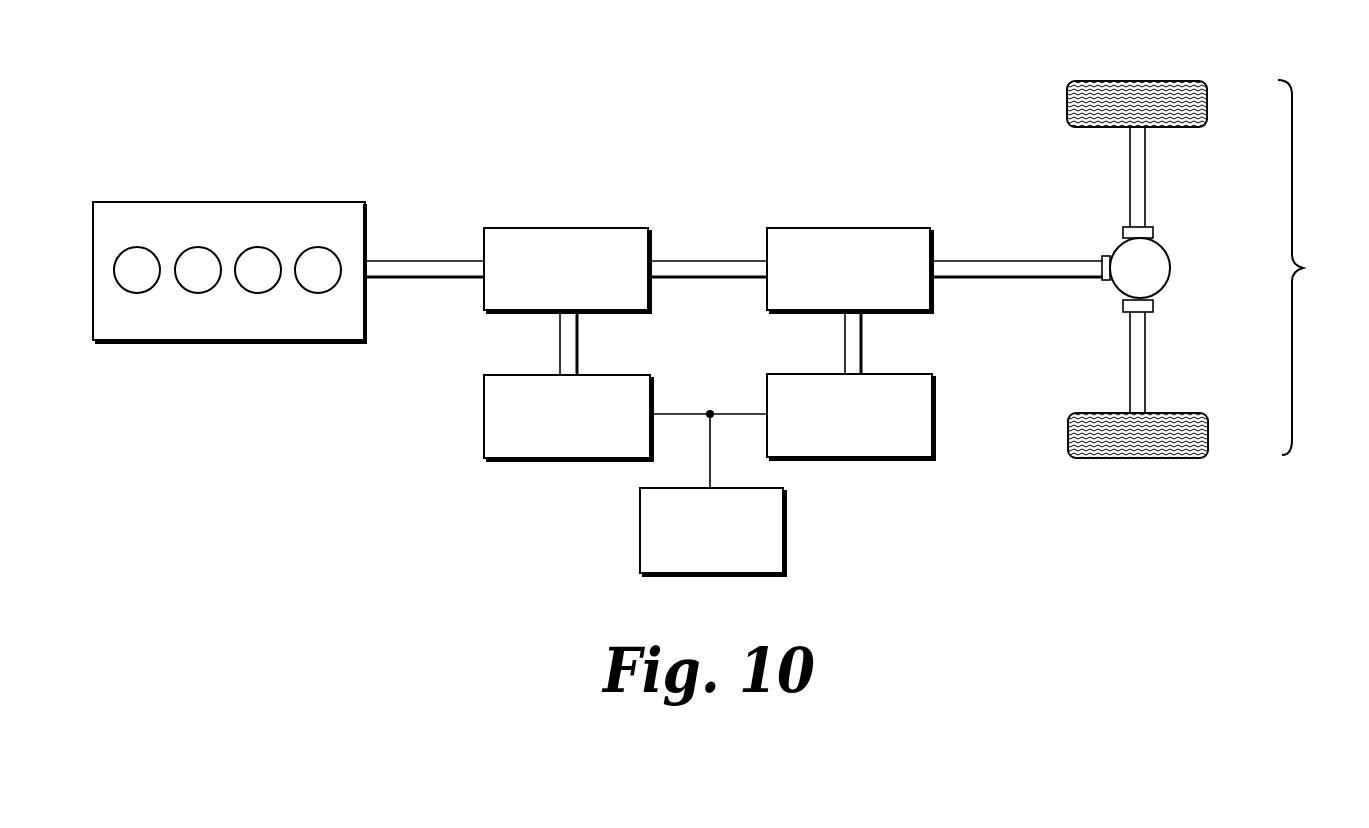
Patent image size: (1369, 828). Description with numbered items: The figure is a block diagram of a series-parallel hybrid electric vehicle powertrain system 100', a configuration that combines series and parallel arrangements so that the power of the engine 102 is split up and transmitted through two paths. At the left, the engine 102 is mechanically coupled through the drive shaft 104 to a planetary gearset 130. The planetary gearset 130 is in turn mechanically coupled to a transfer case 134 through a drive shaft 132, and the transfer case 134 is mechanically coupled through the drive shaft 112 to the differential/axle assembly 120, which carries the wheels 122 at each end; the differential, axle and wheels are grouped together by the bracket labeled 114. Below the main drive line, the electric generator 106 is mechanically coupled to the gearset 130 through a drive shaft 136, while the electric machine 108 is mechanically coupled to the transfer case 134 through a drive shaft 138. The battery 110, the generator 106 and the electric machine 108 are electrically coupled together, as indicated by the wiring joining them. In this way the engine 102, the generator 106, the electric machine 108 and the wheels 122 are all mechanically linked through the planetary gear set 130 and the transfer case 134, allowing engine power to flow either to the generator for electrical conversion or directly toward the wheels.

The series-parallel HEV powertrain system 100' is at (729, 104).
The engine 102 is at (187, 202).
The drive shaft 104 is at (408, 279).
The electric generator 106 is at (484, 415).
The electric machine 108 is at (934, 413).
The battery 110 is at (785, 535).
The drive shaft 112 is at (1015, 279).
The drive axle assembly 114 is at (1209, 269).
The differential/axle assembly 120 is at (1172, 268).
The wheels 122 is at (1165, 128).
The planetary gearset 130 is at (567, 228).
The drive shaft 132 is at (690, 260).
The transfer case 134 is at (842, 228).
The drive shaft 136 is at (579, 335).
The drive shaft 138 is at (842, 335).